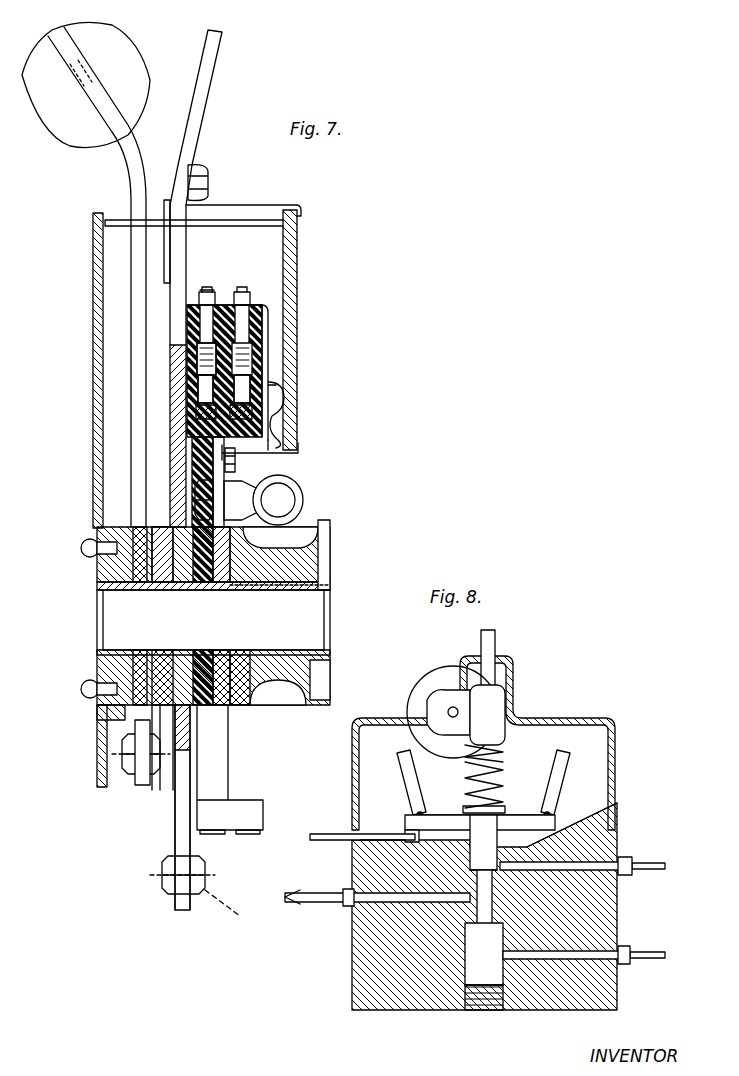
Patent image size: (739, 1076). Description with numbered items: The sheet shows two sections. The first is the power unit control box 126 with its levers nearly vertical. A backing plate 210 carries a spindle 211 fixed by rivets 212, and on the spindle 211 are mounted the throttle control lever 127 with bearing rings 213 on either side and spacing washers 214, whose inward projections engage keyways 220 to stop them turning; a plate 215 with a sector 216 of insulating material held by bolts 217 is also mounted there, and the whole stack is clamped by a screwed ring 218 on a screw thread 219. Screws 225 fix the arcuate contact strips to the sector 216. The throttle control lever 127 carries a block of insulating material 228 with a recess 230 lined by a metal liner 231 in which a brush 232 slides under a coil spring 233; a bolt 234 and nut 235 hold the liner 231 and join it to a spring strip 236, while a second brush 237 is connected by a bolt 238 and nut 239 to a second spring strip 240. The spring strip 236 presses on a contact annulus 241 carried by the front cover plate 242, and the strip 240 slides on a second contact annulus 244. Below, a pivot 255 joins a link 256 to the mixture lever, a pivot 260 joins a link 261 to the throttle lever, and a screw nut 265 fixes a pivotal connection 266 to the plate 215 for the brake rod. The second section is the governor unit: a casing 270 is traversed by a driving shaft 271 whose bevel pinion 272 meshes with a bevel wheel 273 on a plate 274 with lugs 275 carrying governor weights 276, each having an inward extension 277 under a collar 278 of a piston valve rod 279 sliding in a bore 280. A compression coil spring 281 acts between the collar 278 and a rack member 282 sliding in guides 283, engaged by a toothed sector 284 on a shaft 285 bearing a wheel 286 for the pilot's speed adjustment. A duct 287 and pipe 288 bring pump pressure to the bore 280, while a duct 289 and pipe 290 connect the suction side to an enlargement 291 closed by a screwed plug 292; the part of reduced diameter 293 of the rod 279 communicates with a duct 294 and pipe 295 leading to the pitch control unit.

In FIG. 7, the power unit control box 126 is at (128, 186).
In FIG. 7, the throttle control lever 127 is at (205, 80).
In FIG. 7, the backing plate 210 is at (99, 492).
In FIG. 7, the spindle 211 is at (118, 575).
In FIG. 7, the rivets 212 is at (86, 688).
In FIG. 7, the bearing rings 213 is at (225, 720).
In FIG. 7, the spacing washers 214 is at (210, 583).
In FIG. 7, the plate 215 is at (226, 484).
In FIG. 8, the plate 215 is at (405, 828).
In FIG. 7, the sector of insulating material 216 is at (190, 472).
In FIG. 7, the bolts 217 is at (236, 462).
In FIG. 7, the screwed ring 218 is at (288, 585).
In FIG. 7, the screw thread 219 is at (332, 586).
In FIG. 7, the keyways 220 is at (147, 660).
In FIG. 7, the screws 225 is at (195, 440).
In FIG. 7, the block of insulating material 228 is at (205, 322).
In FIG. 7, the recess 230 is at (190, 370).
In FIG. 7, the metal liner 231 is at (205, 388).
In FIG. 7, the brush 232 is at (190, 412).
In FIG. 7, the coil spring 233 is at (198, 345).
In FIG. 7, the bolt 234 is at (192, 308).
In FIG. 7, the nut 235 is at (200, 293).
In FIG. 7, the spring strip 236 is at (286, 410).
In FIG. 7, the second brush 237 is at (266, 335).
In FIG. 7, the bolt 238 is at (262, 310).
In FIG. 7, the nut 239 is at (240, 290).
In FIG. 7, the second spring strip 240 is at (284, 450).
In FIG. 7, the contact annulus 241 is at (280, 428).
In FIG. 7, the front cover plate 242 is at (291, 262).
In FIG. 7, the second contact annulus 244 is at (272, 444).
In FIG. 7, the pivot 255 is at (120, 755).
In FIG. 7, the link 256 is at (140, 778).
In FIG. 7, the pivot 260 is at (222, 912).
In FIG. 7, the link 261 is at (170, 880).
In FIG. 7, the screw nut 265 is at (312, 530).
In FIG. 7, the pivotal connection 266 is at (284, 506).
In FIG. 8, the casing 270 is at (362, 868).
In FIG. 8, the driving shaft 271 is at (380, 836).
In FIG. 8, the bevel pinion 272 is at (410, 842).
In FIG. 8, the bevel wheel 273 is at (440, 832).
In FIG. 8, the plate 274 is at (494, 850).
In FIG. 8, the lugs 275 is at (604, 812).
In FIG. 8, the governor weights 276 is at (572, 762).
In FIG. 8, the inward extension 277 is at (544, 806).
In FIG. 8, the collar 278 is at (500, 790).
In FIG. 8, the piston valve rod 279 is at (465, 880).
In FIG. 8, the bore 280 is at (498, 920).
In FIG. 8, the compression coil spring 281 is at (490, 752).
In FIG. 8, the rack member 282 is at (500, 712).
In FIG. 8, the guides 283 is at (517, 672).
In FIG. 8, the toothed sector 284 is at (456, 700).
In FIG. 8, the shaft 285 is at (440, 710).
In FIG. 8, the wheel 286 is at (452, 665).
In FIG. 8, the duct 287 is at (580, 866).
In FIG. 8, the pipe 288 is at (630, 868).
In FIG. 8, the duct 289 is at (625, 960).
In FIG. 8, the pipe 290 is at (635, 952).
In FIG. 8, the enlargement 291 is at (500, 980).
In FIG. 8, the screwed plug 292 is at (470, 995).
In FIG. 8, the part of reduced diameter 293 is at (485, 957).
In FIG. 8, the duct 294 is at (350, 906).
In FIG. 8, the pipe 295 is at (322, 900).